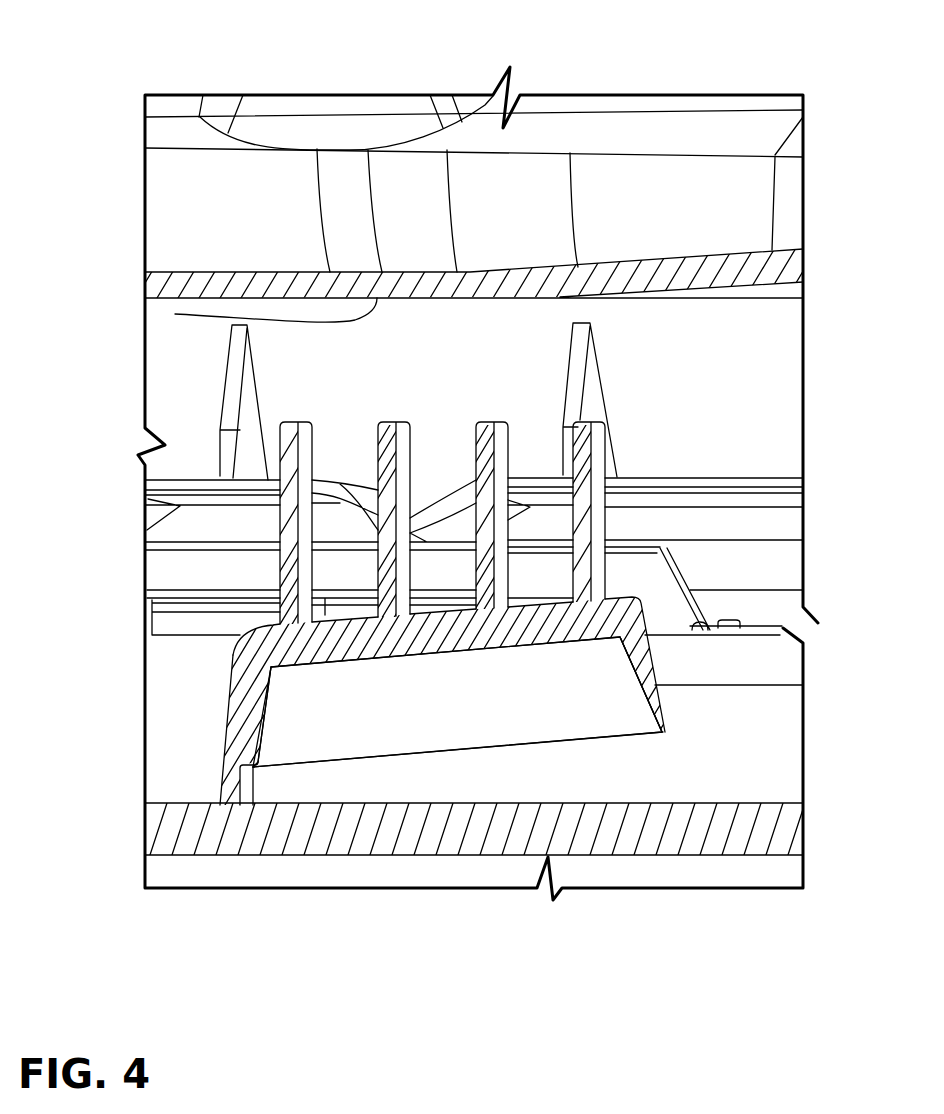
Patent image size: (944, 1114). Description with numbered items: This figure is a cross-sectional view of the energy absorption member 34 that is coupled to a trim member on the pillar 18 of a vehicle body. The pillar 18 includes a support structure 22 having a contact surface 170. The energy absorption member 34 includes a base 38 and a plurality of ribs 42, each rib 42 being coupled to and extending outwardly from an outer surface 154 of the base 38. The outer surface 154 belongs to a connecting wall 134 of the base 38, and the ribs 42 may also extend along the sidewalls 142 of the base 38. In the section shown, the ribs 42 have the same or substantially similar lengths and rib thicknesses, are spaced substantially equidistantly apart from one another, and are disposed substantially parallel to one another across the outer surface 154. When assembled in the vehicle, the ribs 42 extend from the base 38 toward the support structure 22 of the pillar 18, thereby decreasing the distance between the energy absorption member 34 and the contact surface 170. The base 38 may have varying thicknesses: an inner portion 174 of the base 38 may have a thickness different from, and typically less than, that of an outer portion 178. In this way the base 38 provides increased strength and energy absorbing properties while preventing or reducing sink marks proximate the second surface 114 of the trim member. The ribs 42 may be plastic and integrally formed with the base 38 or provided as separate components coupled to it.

The pillar 18 is at (716, 126).
The support structure 22 is at (723, 268).
The contact surface 170 is at (175, 314).
The rib 42 is at (390, 440).
The energy absorption member 34 is at (640, 616).
The outer surface 154 is at (267, 627).
The outer portion 178 is at (247, 690).
The connecting wall 134 is at (580, 627).
The sidewall 142 is at (228, 730).
The base 38 is at (243, 752).
The inner portion 174 is at (232, 783).
The second surface 114 is at (373, 791).